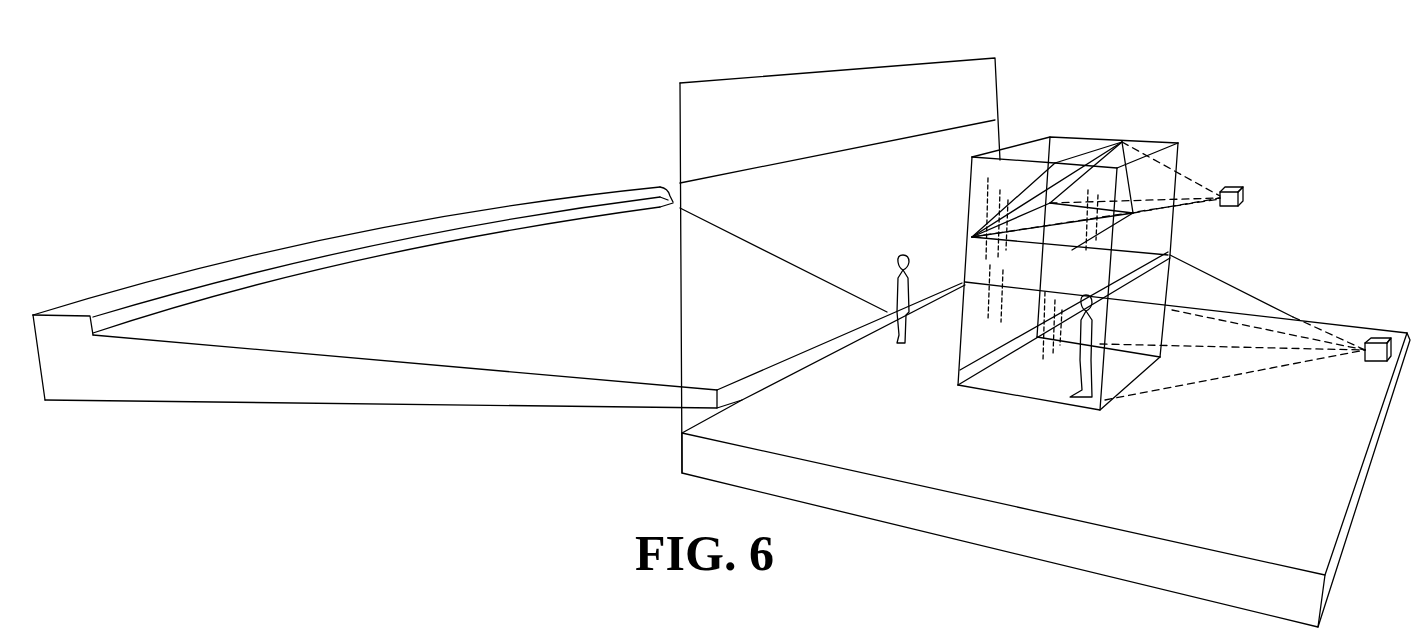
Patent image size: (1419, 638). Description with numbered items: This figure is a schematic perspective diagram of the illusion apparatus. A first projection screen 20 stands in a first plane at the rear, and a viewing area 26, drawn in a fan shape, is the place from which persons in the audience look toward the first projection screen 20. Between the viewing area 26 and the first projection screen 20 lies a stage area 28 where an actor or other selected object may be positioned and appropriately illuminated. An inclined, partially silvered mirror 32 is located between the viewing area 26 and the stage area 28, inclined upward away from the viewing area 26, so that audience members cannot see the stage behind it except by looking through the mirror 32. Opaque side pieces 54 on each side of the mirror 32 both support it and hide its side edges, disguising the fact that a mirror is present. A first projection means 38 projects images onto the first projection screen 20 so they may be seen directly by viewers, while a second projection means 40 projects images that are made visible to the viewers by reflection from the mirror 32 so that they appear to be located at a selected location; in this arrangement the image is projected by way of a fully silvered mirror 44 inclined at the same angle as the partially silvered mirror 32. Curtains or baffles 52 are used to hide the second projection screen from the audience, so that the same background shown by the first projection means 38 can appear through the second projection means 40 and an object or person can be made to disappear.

The first projection screen 20 is at (1122, 335).
The viewing area 26 is at (437, 260).
The stage area 28 is at (1010, 378).
The partially silvered mirror 32 is at (1045, 275).
The first projection means 38 is at (1375, 338).
The second projection means 40 is at (1243, 192).
The fully silvered mirror 44 is at (1032, 190).
The curtains or baffles 52 is at (757, 95).
The opaque side pieces 54 is at (1032, 353).